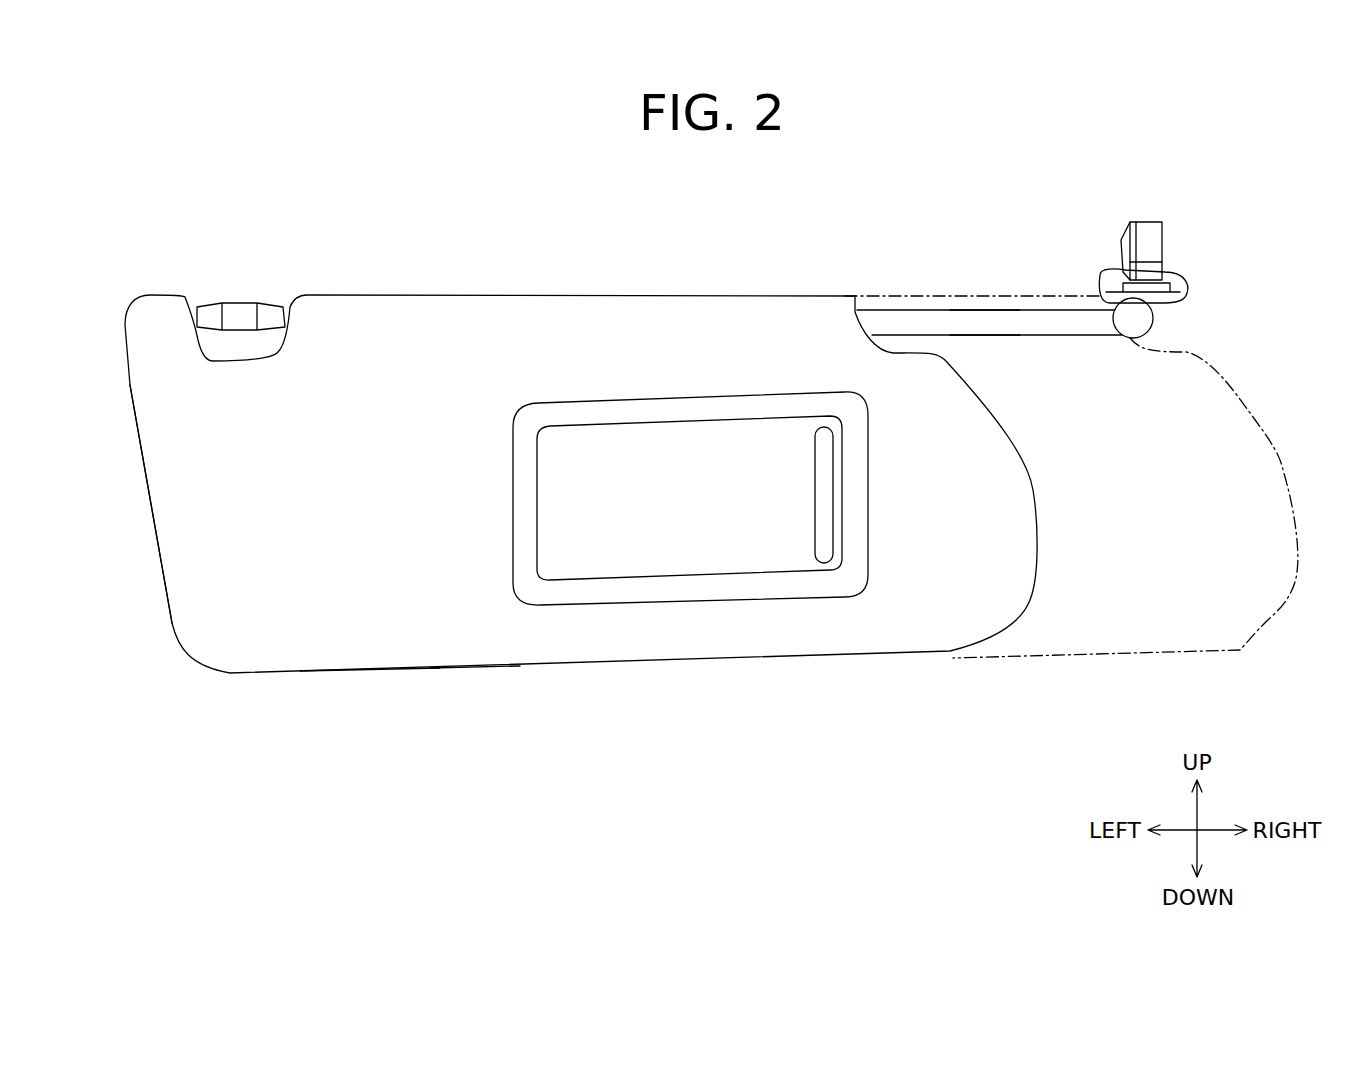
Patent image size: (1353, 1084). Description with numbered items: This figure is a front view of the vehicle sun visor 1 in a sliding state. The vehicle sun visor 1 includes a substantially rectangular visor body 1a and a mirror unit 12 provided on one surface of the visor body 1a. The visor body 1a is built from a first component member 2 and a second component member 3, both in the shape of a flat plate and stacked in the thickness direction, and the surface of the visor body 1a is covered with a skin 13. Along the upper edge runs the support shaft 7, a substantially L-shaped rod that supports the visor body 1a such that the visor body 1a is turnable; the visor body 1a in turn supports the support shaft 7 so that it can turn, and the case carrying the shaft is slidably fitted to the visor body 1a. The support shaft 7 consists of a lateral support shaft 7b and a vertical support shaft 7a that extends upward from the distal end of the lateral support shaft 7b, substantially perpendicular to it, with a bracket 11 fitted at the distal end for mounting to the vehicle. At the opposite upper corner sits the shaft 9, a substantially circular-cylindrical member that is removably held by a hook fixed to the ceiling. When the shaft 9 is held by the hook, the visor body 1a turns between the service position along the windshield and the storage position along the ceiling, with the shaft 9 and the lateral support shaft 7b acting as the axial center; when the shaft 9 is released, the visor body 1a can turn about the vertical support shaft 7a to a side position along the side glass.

The vehicle sun visor 1 is at (279, 738).
The visor body 1a is at (166, 632).
The first component member 2 is at (370, 717).
The second component member 3 is at (370, 628).
The support shaft 7 is at (1049, 299).
The vertical support shaft 7a is at (1142, 318).
The lateral support shaft 7b is at (984, 325).
The shaft 9 is at (253, 291).
The bracket 11 is at (1188, 278).
The mirror unit 12 is at (683, 613).
The skin 13 is at (468, 625).